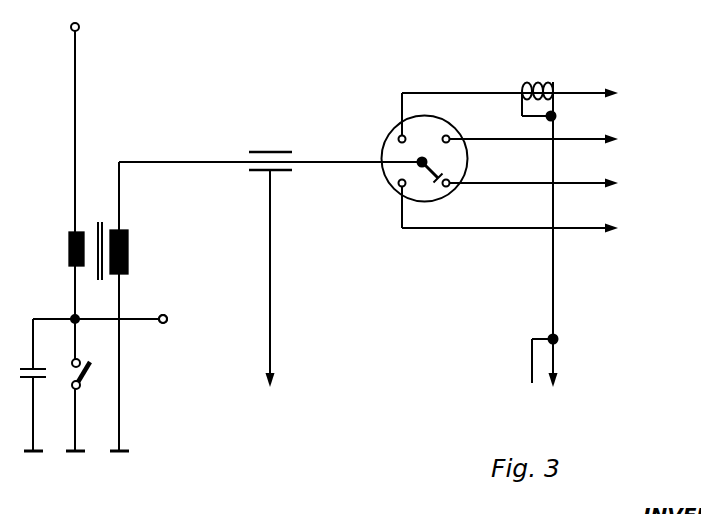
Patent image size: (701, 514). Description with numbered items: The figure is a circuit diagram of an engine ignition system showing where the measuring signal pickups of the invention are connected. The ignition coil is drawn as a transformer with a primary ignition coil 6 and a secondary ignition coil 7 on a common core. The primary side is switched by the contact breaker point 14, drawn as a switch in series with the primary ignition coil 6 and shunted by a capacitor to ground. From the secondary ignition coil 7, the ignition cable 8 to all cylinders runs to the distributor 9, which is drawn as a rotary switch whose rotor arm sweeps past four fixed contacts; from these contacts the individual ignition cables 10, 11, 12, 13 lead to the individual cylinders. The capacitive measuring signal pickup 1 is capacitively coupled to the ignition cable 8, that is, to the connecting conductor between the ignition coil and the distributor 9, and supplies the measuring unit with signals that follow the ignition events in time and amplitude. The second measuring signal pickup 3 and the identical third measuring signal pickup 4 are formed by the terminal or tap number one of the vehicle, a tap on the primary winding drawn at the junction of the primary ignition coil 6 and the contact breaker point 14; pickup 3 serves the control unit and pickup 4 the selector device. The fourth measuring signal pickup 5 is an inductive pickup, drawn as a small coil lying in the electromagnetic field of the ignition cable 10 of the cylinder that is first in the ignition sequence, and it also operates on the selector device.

The measuring signal pickup 1 is at (252, 153).
The second measuring signal pickup 3 is at (177, 305).
The third measuring signal pickup 4 is at (163, 319).
The fourth measuring signal pickup 5 is at (541, 81).
The primary ignition coil 6 is at (68, 254).
The secondary ignition coil 7 is at (129, 254).
The ignition cable to all cylinders 8 is at (168, 160).
The distributor 9 is at (383, 186).
The individual ignition cable 10 is at (580, 95).
The individual ignition cable 11 is at (585, 140).
The individual ignition cable 12 is at (586, 185).
The individual ignition cable 13 is at (588, 228).
The contact breaker point 14 is at (84, 375).